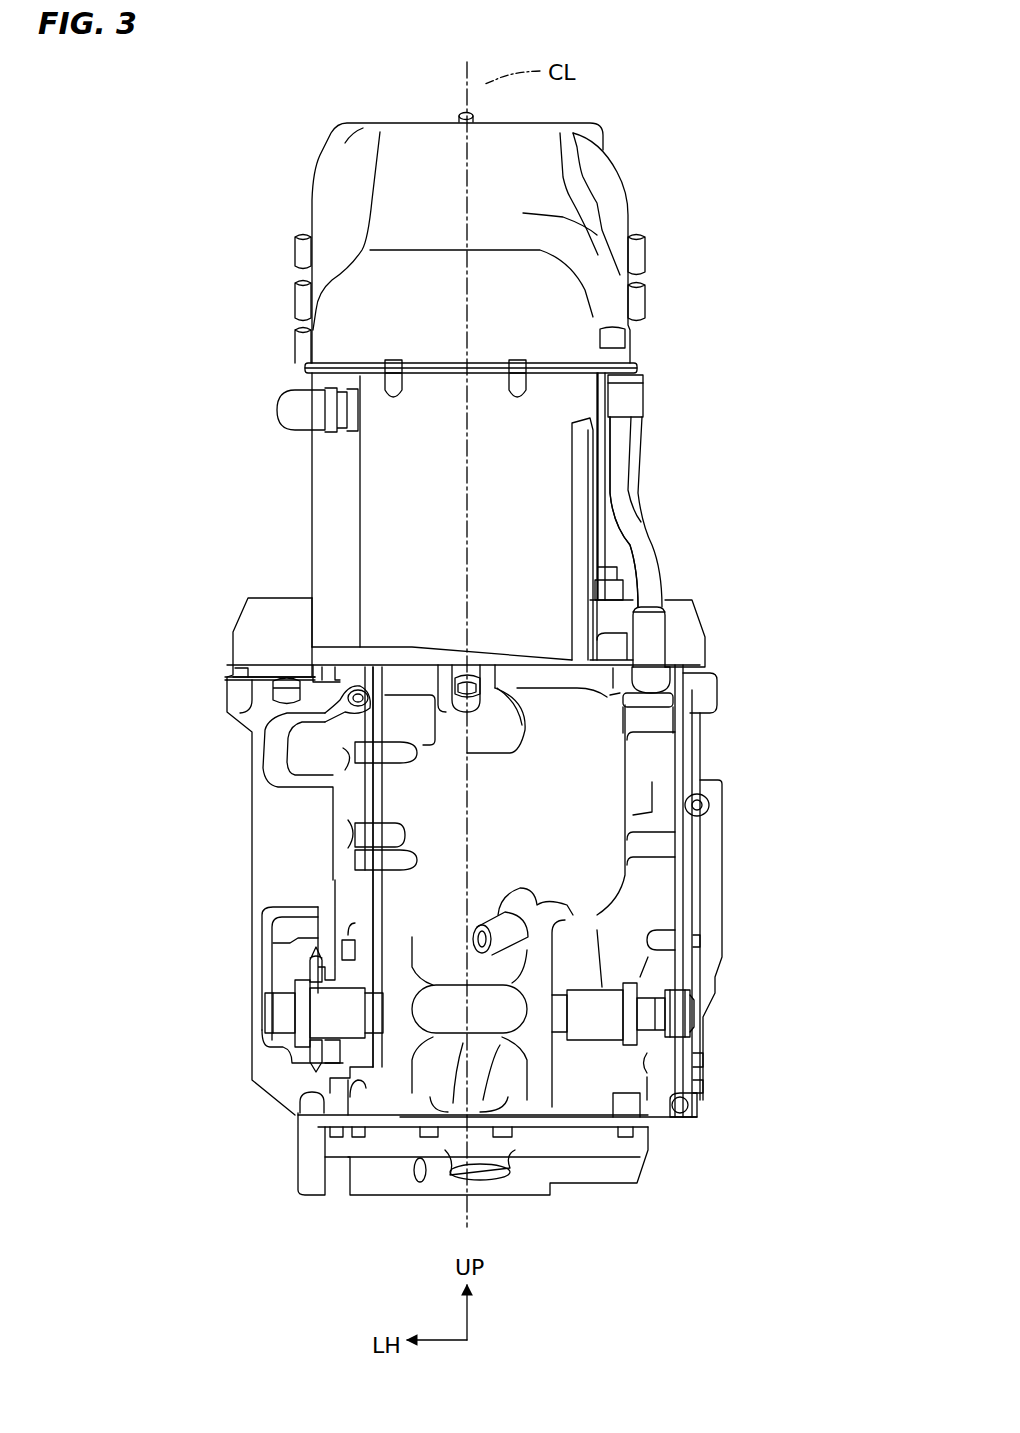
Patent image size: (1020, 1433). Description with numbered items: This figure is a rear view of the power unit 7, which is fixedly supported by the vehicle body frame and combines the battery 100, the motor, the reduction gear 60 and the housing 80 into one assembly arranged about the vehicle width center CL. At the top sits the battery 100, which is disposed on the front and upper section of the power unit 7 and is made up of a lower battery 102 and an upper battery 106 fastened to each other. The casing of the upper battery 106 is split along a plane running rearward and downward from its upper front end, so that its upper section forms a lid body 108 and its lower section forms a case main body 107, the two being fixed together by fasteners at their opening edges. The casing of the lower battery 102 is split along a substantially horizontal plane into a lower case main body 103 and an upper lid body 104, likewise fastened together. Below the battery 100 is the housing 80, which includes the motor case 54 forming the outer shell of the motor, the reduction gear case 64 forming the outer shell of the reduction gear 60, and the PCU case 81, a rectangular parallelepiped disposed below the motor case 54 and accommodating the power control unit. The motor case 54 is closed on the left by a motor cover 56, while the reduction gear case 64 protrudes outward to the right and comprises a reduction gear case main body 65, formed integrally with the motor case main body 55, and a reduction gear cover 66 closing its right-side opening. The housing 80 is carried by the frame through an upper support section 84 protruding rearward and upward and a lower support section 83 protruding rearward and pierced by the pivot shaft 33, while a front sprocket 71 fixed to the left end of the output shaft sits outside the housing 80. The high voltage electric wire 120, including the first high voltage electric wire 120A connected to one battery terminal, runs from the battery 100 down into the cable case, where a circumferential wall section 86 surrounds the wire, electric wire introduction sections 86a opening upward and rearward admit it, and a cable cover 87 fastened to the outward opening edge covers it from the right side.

The power unit 7 is at (206, 124).
The lid body 108 is at (330, 218).
The upper battery 106 is at (294, 363).
The battery 100 is at (309, 471).
The first high voltage electric wire 120A is at (625, 520).
The high voltage electric wire 120 is at (624, 512).
The case main body 107 is at (330, 540).
The upper support section 84 is at (445, 690).
The housing 80 is at (517, 662).
The lid body 104 is at (255, 656).
The lower battery 102 is at (246, 773).
The motor case 54 is at (329, 836).
The motor cover 56 is at (345, 885).
The case main body 103 is at (250, 927).
The front sprocket 71 is at (315, 969).
The pivot shaft 33 is at (280, 1015).
The lower support section 83 is at (377, 1012).
The PCU case 81 is at (585, 1150).
The reduction gear 60 is at (728, 957).
The circumferential wall section 86 is at (660, 720).
The electric wire introduction section 86a is at (662, 692).
The cable cover 87 is at (683, 696).
The motor case main body 55 is at (577, 790).
The reduction gear cover 66 is at (715, 853).
The reduction gear case main body 65 is at (655, 900).
The reduction gear case 64 is at (846, 845).